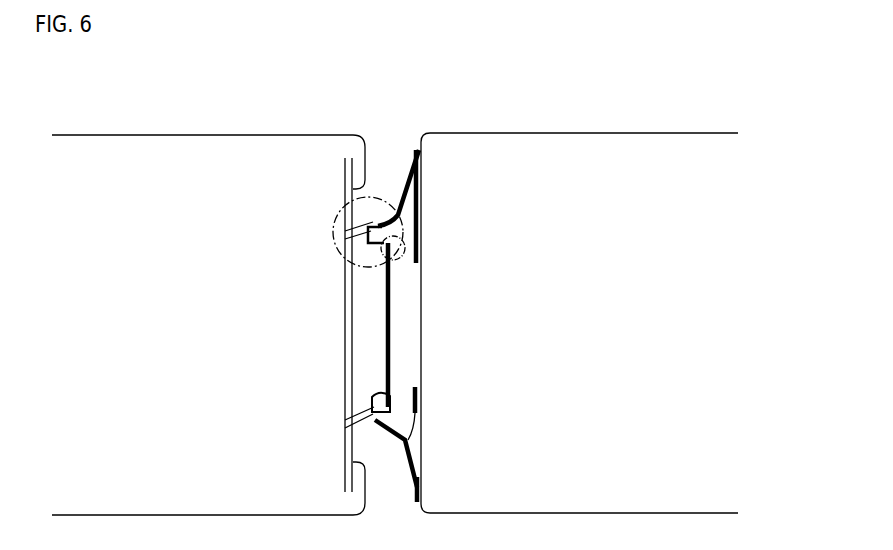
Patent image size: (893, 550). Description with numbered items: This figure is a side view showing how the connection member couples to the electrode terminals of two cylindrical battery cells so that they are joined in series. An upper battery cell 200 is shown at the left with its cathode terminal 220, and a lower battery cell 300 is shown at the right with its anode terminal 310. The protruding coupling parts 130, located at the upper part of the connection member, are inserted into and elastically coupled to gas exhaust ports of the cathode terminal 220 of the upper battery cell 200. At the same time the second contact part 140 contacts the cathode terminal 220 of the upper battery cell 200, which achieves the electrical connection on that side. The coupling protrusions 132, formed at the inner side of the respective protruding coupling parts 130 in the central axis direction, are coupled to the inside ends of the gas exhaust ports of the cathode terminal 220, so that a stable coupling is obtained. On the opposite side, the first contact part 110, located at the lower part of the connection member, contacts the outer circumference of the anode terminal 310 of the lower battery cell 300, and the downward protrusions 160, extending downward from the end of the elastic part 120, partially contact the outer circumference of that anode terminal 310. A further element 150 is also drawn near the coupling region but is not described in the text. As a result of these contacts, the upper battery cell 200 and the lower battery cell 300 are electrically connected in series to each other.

The first contact part 110 is at (420, 493).
The elastic part 120 is at (407, 466).
The protruding coupling part 130 is at (378, 202).
The coupling protrusion 132 is at (372, 395).
The second contact part 140 is at (392, 375).
The clip 150 is at (406, 250).
The downward protrusion 160 is at (402, 223).
The upper battery cell 200 is at (140, 160).
The cathode terminal 220 is at (340, 236).
The lower battery cell 300 is at (543, 157).
The anode terminal 310 is at (420, 293).